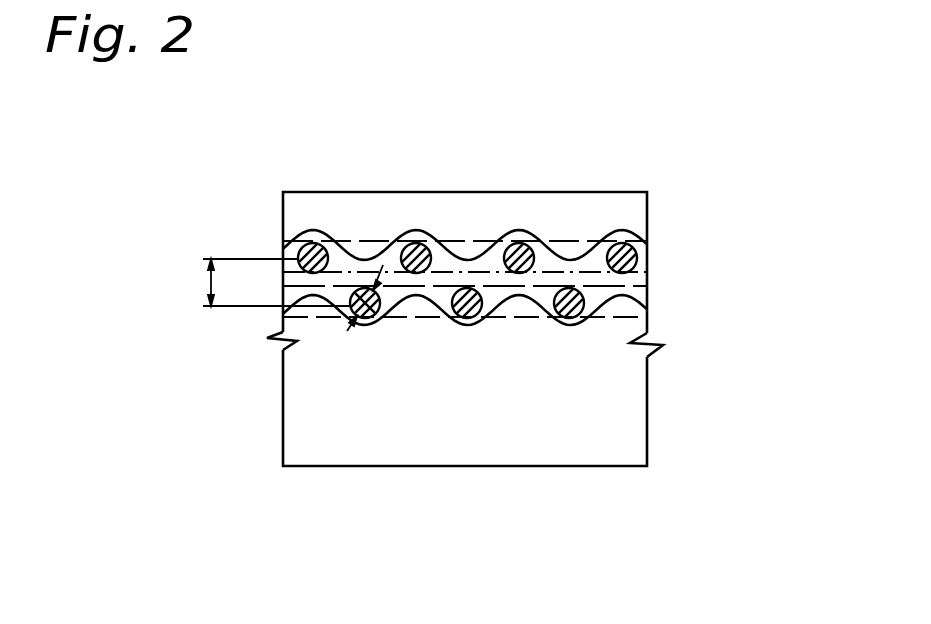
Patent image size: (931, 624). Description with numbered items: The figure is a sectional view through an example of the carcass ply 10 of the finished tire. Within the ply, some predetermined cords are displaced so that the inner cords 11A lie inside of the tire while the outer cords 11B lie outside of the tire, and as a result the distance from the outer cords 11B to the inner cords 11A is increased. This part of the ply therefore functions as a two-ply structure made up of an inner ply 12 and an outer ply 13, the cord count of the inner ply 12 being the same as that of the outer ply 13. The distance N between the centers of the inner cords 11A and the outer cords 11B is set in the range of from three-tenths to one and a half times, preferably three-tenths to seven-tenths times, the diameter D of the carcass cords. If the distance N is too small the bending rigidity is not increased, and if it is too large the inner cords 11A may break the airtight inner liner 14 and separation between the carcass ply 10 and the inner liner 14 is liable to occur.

The carcass ply 10 is at (623, 230).
The inner cords 11A is at (313, 245).
The outer cords 11B is at (459, 318).
The inner ply 12 is at (290, 245).
The outer ply 13 is at (312, 314).
The airtight inner liner 14 is at (502, 203).
The distance between cord centers N is at (208, 280).
The cord diameter D is at (347, 331).